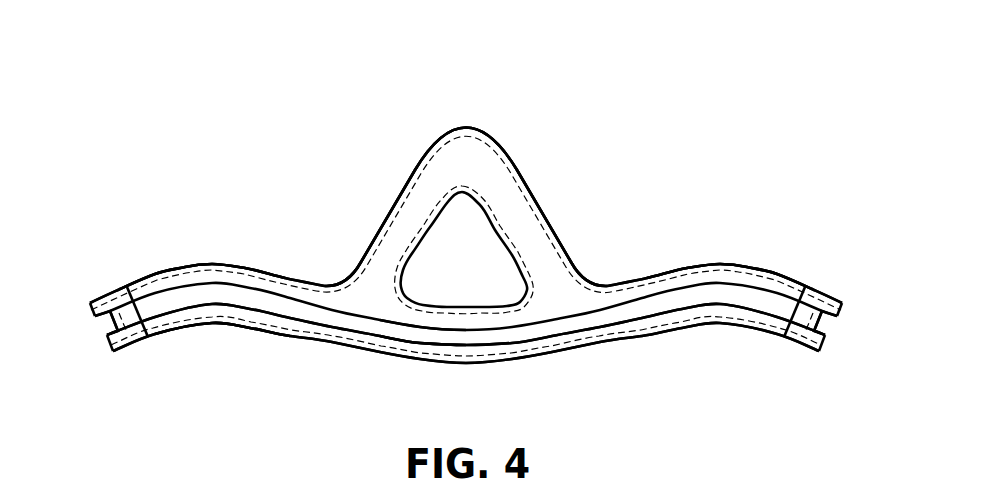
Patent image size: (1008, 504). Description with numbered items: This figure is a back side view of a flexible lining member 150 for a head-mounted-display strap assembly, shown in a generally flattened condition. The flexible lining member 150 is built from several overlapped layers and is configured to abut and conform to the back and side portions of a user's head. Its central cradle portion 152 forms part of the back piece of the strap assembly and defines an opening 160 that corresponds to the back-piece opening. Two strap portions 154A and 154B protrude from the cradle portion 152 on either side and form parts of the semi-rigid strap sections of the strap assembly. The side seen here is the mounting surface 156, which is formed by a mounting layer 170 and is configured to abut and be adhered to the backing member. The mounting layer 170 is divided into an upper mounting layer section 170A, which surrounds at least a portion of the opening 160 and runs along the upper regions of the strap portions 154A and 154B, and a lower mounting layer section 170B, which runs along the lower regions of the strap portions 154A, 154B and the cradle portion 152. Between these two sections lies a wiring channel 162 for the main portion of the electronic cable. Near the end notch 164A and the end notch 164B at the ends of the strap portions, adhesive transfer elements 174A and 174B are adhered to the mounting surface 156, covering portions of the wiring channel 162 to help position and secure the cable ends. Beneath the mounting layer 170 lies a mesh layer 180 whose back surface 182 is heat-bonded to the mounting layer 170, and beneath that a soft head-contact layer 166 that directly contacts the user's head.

The flexible lining member 150 is at (207, 140).
The cradle portion 152 is at (410, 170).
The strap portion 154A is at (743, 265).
The strap portion 154B is at (180, 265).
The mounting surface 156 is at (540, 248).
The opening 160 is at (474, 228).
The wiring channel 162 is at (311, 321).
The end notch 164A is at (828, 328).
The end notch 164B is at (100, 328).
The head-contact layer 166 is at (370, 240).
The mounting layer 170 is at (682, 270).
The upper mounting layer section 170A is at (262, 272).
The lower mounting layer section 170B is at (226, 332).
The adhesive transfer element 174A is at (822, 295).
The adhesive transfer element 174B is at (99, 297).
The mesh layer 180 is at (470, 128).
The back surface 182 is at (405, 336).